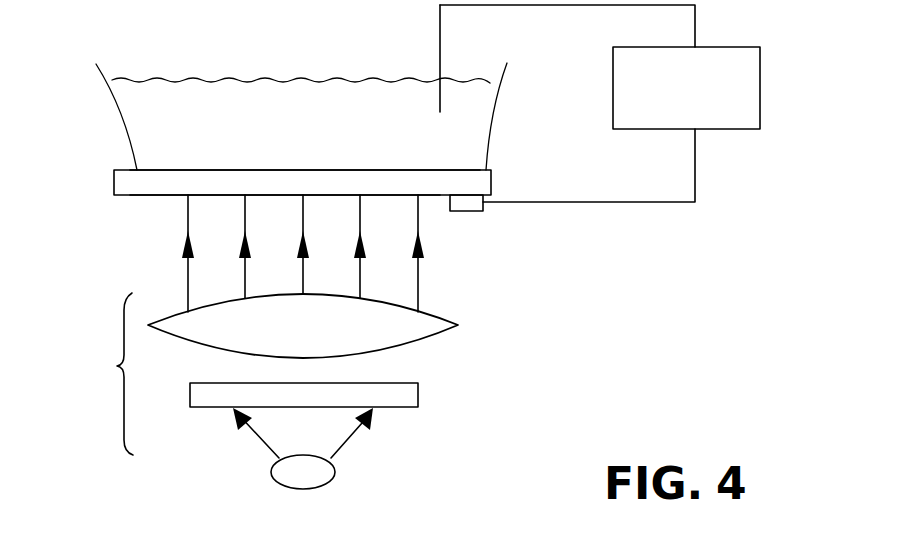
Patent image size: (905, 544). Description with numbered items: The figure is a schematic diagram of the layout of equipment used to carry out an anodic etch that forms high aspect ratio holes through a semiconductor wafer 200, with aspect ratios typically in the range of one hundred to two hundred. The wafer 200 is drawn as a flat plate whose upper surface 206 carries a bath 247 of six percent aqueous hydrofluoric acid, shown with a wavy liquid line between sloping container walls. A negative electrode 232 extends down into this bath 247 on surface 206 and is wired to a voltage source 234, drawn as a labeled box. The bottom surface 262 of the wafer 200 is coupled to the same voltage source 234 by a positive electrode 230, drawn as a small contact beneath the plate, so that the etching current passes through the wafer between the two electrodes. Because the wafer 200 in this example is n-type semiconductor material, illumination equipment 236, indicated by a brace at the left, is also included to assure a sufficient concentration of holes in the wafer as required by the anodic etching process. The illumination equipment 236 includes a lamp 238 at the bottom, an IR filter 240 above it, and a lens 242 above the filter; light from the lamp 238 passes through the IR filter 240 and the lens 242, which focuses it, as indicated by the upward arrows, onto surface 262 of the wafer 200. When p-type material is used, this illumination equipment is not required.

The semiconductor wafer 200 is at (114, 180).
The surface 206 is at (225, 168).
The bottom surface 262 is at (165, 197).
The electrolyte bath 247 is at (200, 128).
The negative electrode 232 is at (438, 32).
The voltage source 234 is at (730, 47).
The positive electrode 230 is at (468, 211).
The illumination equipment 236 is at (93, 374).
The lens 242 is at (445, 313).
The IR filter 240 is at (420, 392).
The lamp 238 is at (337, 472).